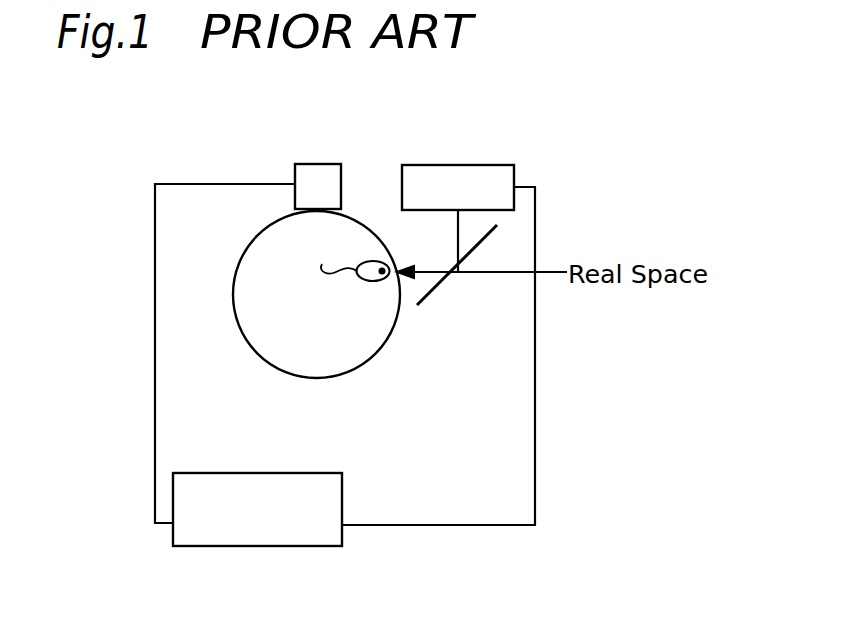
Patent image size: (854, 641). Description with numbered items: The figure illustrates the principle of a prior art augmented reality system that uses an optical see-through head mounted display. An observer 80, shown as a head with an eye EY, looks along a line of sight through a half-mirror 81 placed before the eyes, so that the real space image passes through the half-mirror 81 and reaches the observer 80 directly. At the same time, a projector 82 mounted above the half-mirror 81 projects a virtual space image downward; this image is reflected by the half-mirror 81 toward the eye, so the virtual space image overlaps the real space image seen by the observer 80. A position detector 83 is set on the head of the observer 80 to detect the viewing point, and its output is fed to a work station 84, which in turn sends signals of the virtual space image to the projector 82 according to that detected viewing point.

The observer 80 is at (240, 258).
The half-mirror 81 is at (437, 290).
The projector 82 is at (460, 164).
The position detector 83 is at (320, 163).
The work station 84 is at (256, 547).